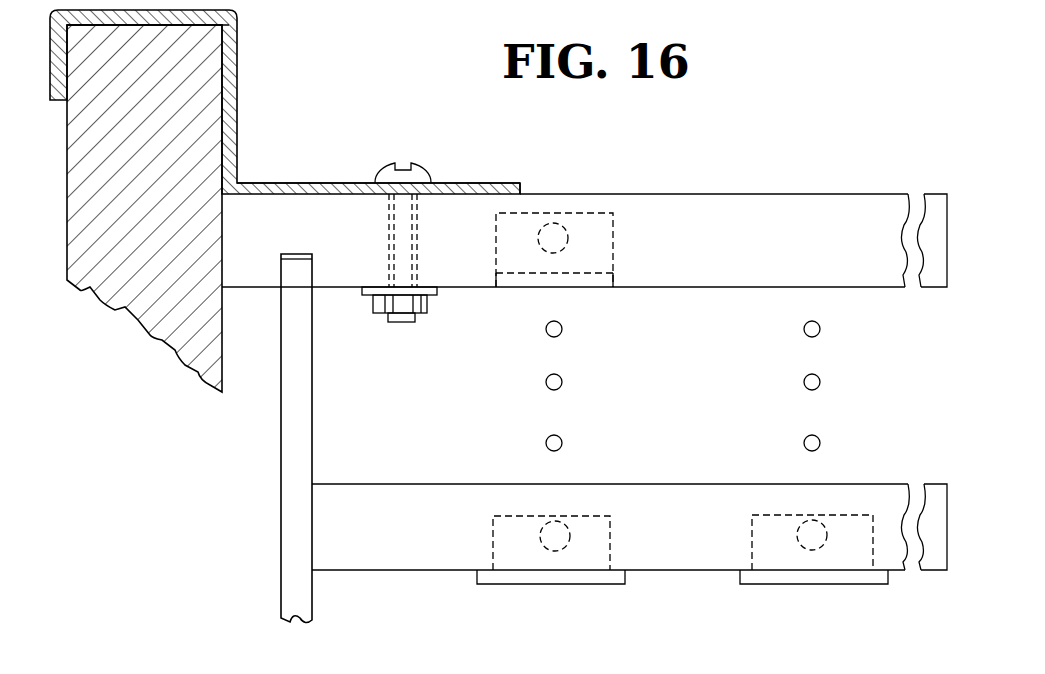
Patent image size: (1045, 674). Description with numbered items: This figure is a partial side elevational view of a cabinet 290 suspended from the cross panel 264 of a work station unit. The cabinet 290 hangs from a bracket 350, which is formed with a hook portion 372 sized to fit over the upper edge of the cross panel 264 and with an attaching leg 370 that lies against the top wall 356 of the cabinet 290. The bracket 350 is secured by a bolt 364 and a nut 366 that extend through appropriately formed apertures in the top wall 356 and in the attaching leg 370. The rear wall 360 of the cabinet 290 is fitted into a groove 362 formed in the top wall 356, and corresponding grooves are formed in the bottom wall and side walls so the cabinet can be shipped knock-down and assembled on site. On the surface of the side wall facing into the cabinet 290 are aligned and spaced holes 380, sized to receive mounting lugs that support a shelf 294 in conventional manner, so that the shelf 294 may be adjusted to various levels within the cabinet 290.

The cross panel 264 is at (157, 247).
The cabinet 290 is at (584, 229).
The shelf 294 is at (405, 539).
The bracket 350 is at (238, 90).
The top wall 356 is at (476, 263).
The rear wall 360 is at (353, 421).
The groove 362 is at (305, 253).
The bolt 364 is at (423, 173).
The nut 366 is at (403, 325).
The attaching leg 370 is at (510, 182).
The hook portion 372 is at (148, 28).
The holes 380 is at (560, 440).